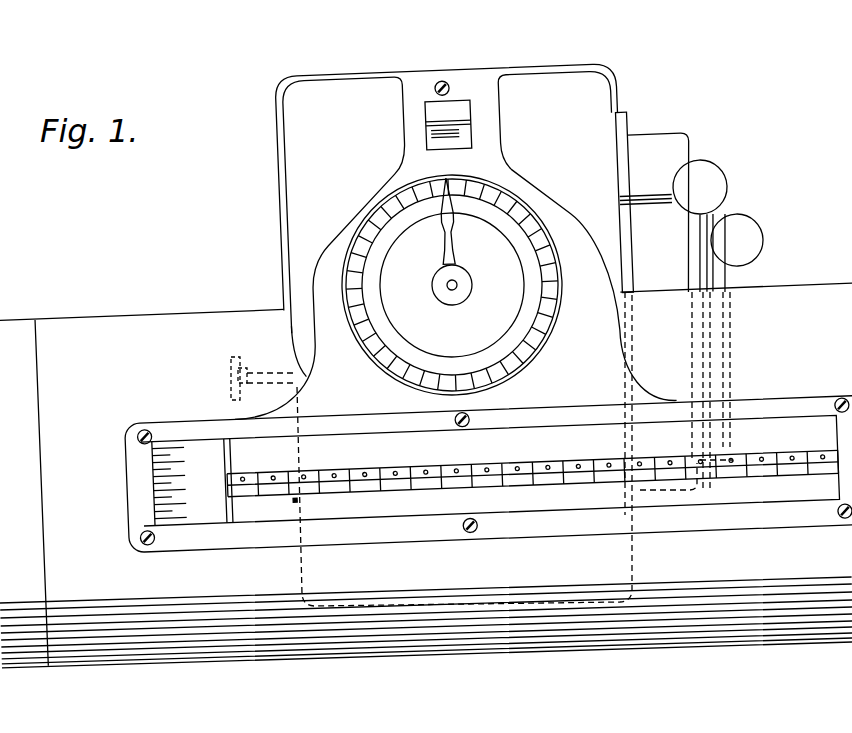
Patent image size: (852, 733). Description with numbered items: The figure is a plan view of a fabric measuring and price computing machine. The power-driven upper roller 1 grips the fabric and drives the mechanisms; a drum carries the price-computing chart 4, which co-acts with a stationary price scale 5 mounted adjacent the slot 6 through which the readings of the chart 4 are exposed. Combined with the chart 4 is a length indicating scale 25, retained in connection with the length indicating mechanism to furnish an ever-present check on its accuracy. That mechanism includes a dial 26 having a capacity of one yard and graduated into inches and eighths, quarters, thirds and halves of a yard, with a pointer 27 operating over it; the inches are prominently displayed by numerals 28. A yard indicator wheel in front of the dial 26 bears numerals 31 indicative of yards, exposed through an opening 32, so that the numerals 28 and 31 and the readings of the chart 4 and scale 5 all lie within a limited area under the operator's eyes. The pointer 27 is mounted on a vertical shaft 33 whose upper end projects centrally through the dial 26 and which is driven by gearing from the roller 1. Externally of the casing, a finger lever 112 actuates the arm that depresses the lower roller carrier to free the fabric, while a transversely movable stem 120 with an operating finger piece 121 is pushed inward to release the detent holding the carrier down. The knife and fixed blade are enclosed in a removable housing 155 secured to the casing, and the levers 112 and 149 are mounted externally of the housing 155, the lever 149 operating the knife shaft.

The upper roller 1 is at (605, 98).
The price-computing chart 4 is at (330, 470).
The stationary price scale 5 is at (388, 488).
The slot 6 is at (287, 494).
The length indicating scale 25 is at (143, 455).
The dial 26 is at (539, 323).
The pointer 27 is at (459, 238).
The numerals 28 is at (511, 327).
The numerals 31 is at (455, 110).
The opening 32 is at (478, 123).
The vertical shaft 33 is at (460, 285).
The operating lever 112 is at (764, 252).
The stem 120 is at (262, 372).
The finger piece 121 is at (233, 357).
The lever 149 is at (730, 201).
The housing 155 is at (680, 159).